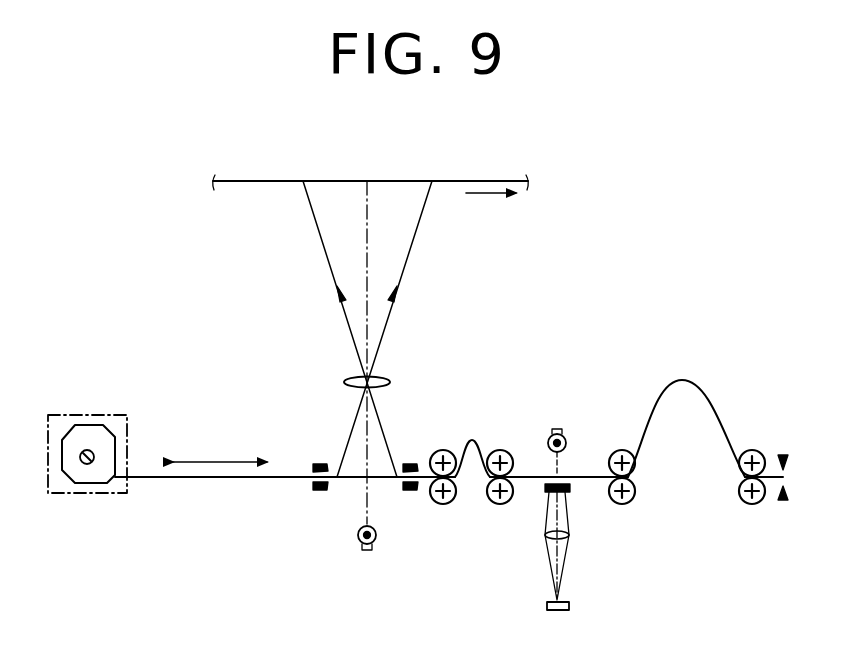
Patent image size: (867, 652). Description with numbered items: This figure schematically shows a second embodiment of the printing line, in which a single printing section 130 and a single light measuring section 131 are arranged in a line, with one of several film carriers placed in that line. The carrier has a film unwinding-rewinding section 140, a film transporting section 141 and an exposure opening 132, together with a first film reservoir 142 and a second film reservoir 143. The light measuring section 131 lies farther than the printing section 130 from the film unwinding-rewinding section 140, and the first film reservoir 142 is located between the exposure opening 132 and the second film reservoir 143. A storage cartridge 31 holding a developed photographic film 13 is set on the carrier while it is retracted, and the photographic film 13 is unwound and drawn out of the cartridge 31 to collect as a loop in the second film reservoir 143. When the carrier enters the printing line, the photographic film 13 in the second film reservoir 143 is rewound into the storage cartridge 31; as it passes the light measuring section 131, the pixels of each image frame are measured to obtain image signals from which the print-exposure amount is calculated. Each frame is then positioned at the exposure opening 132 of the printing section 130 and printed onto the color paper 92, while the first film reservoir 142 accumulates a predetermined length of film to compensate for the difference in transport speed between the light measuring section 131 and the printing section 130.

The photographic film 13 is at (182, 480).
The storage cartridge 31 is at (93, 424).
The color paper 92 is at (452, 182).
The printing section 130 is at (347, 391).
The light measuring section 131 is at (578, 545).
The exposure opening 132 is at (406, 492).
The film unwinding-rewinding section 140 is at (65, 496).
The film transporting section 141 is at (289, 482).
The first film reservoir 142 is at (480, 428).
The second film reservoir 143 is at (690, 372).